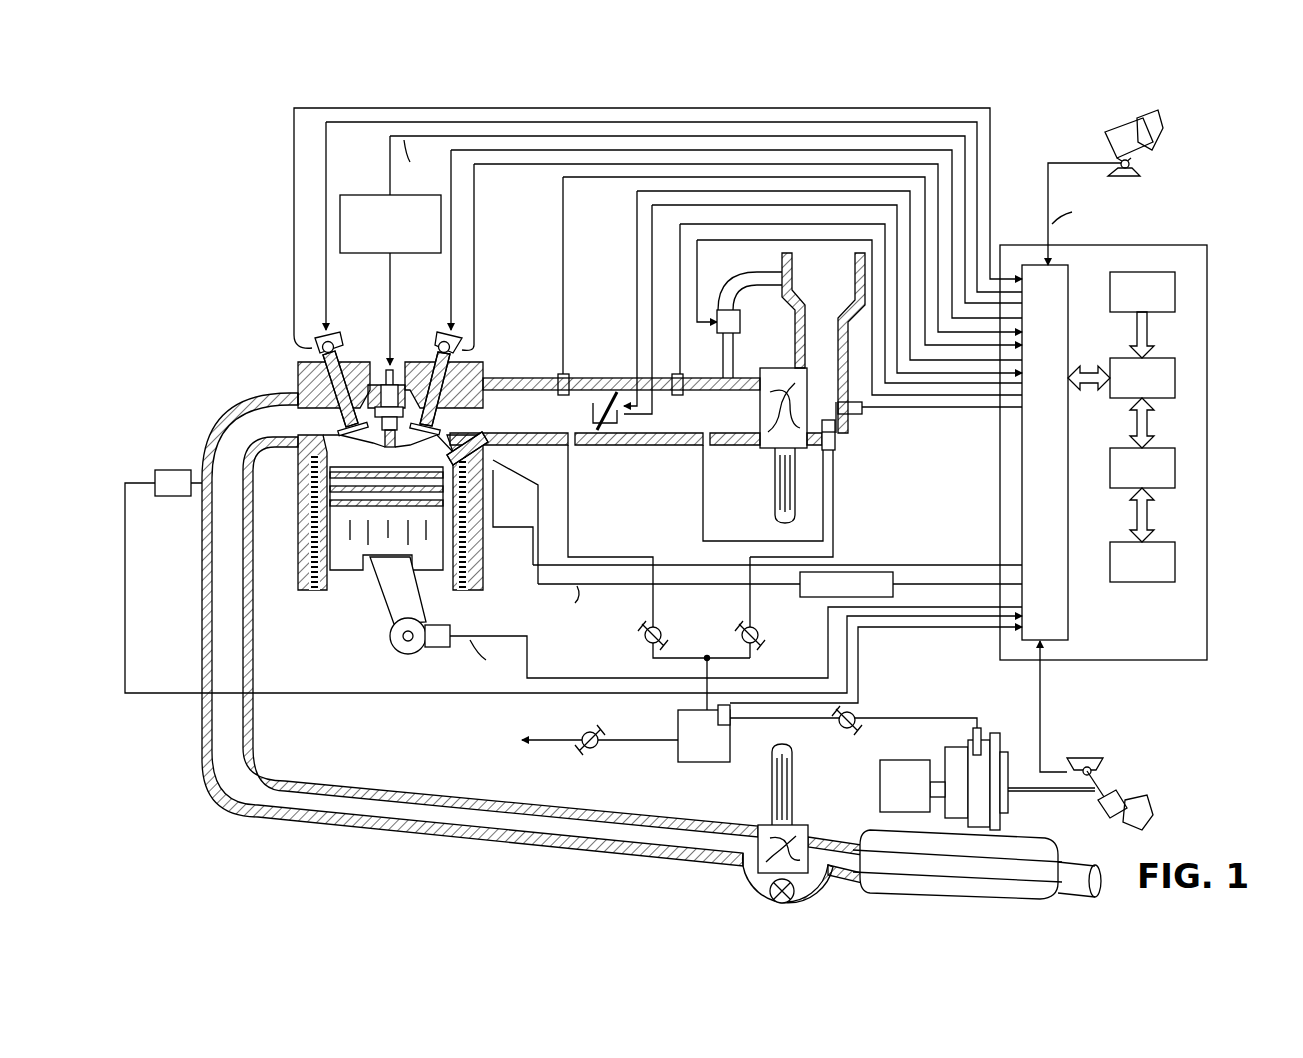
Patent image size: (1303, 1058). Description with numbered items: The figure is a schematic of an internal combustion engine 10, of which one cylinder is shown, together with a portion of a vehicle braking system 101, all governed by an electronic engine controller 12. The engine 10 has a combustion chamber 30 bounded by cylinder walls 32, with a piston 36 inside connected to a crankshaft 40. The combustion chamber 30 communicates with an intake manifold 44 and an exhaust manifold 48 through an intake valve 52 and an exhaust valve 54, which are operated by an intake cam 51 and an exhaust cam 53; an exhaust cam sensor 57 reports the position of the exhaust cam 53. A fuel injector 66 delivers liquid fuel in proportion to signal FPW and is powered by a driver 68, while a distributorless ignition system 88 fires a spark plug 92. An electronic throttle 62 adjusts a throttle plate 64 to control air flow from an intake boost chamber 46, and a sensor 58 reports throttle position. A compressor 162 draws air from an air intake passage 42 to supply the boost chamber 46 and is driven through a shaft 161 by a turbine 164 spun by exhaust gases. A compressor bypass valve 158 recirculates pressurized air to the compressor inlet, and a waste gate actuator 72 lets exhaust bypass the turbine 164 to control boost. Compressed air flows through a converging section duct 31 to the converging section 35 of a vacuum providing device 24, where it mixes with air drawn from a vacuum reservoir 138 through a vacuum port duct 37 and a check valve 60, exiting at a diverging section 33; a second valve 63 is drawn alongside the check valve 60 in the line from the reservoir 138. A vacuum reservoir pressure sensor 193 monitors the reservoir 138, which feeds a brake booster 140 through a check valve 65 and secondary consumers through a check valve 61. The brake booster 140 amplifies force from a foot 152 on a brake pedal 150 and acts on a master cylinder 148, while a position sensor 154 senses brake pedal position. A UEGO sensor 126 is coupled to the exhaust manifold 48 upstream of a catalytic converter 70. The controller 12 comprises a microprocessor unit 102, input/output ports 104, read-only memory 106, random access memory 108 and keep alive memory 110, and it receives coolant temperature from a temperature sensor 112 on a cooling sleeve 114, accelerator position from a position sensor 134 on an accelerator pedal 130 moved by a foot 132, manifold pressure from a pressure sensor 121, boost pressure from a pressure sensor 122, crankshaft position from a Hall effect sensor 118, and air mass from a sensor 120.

The internal combustion engine 10 is at (238, 323).
The electronic engine controller 12 is at (1195, 247).
The vacuum providing device 24 is at (842, 448).
The combustion chamber 30 is at (312, 540).
The converging section duct 31 is at (710, 538).
The cylinder walls 32 is at (375, 548).
The diverging section 33 is at (836, 400).
The converging section 35 is at (825, 450).
The piston 36 is at (364, 555).
The vacuum port duct 37 is at (836, 540).
The crankshaft 40 is at (394, 652).
The air intake passage 42 is at (823, 349).
The intake manifold 44 is at (621, 401).
The intake boost chamber 46 is at (605, 423).
The exhaust manifold 48 is at (480, 629).
The intake cam 51 is at (440, 332).
The intake valve 52 is at (440, 430).
The exhaust cam 53 is at (334, 332).
The exhaust valve 54 is at (340, 403).
The exhaust cam sensor 57 is at (314, 350).
The throttle position sensor 58 is at (617, 432).
The check valve 60 is at (758, 630).
The check valve 61 is at (596, 750).
The electronic throttle 62 is at (598, 400).
The vacuum check valve 63 is at (660, 630).
The throttle plate 64 is at (612, 386).
The check valve 65 is at (840, 728).
The fuel injector 66 is at (492, 508).
The driver 68 is at (893, 586).
The catalytic converter 70 is at (860, 880).
The waste gate actuator 72 is at (768, 893).
The distributorless ignition system 88 is at (347, 197).
The spark plug 92 is at (392, 370).
The vehicle braking system 101 is at (1163, 722).
The microprocessor unit 102 is at (1175, 378).
The input/output ports 104 is at (1068, 275).
The read-only memory 106 is at (1175, 290).
The random access memory 108 is at (1175, 468).
The keep alive memory 110 is at (1175, 562).
The temperature sensor 112 is at (492, 526).
The cooling sleeve 114 is at (470, 562).
The Hall effect sensor 118 is at (438, 648).
The air mass sensor 120 is at (856, 414).
The pressure sensor 121 is at (558, 374).
The pressure sensor 122 is at (683, 376).
The UEGO sensor 126 is at (155, 475).
The accelerator pedal 130 is at (1105, 140).
The foot 132 is at (1152, 124).
The position sensor 134 is at (1145, 168).
The vacuum reservoir 138 is at (678, 716).
The brake booster 140 is at (982, 740).
The master cylinder 148 is at (880, 775).
The brake pedal 150 is at (1108, 814).
The foot 152 is at (1142, 793).
The position sensor 154 is at (1098, 760).
The compressor bypass valve 158 is at (742, 322).
The shaft 161 is at (775, 462).
The compressor 162 is at (781, 368).
The turbine 164 is at (760, 828).
The vacuum reservoir pressure sensor 193 is at (731, 712).